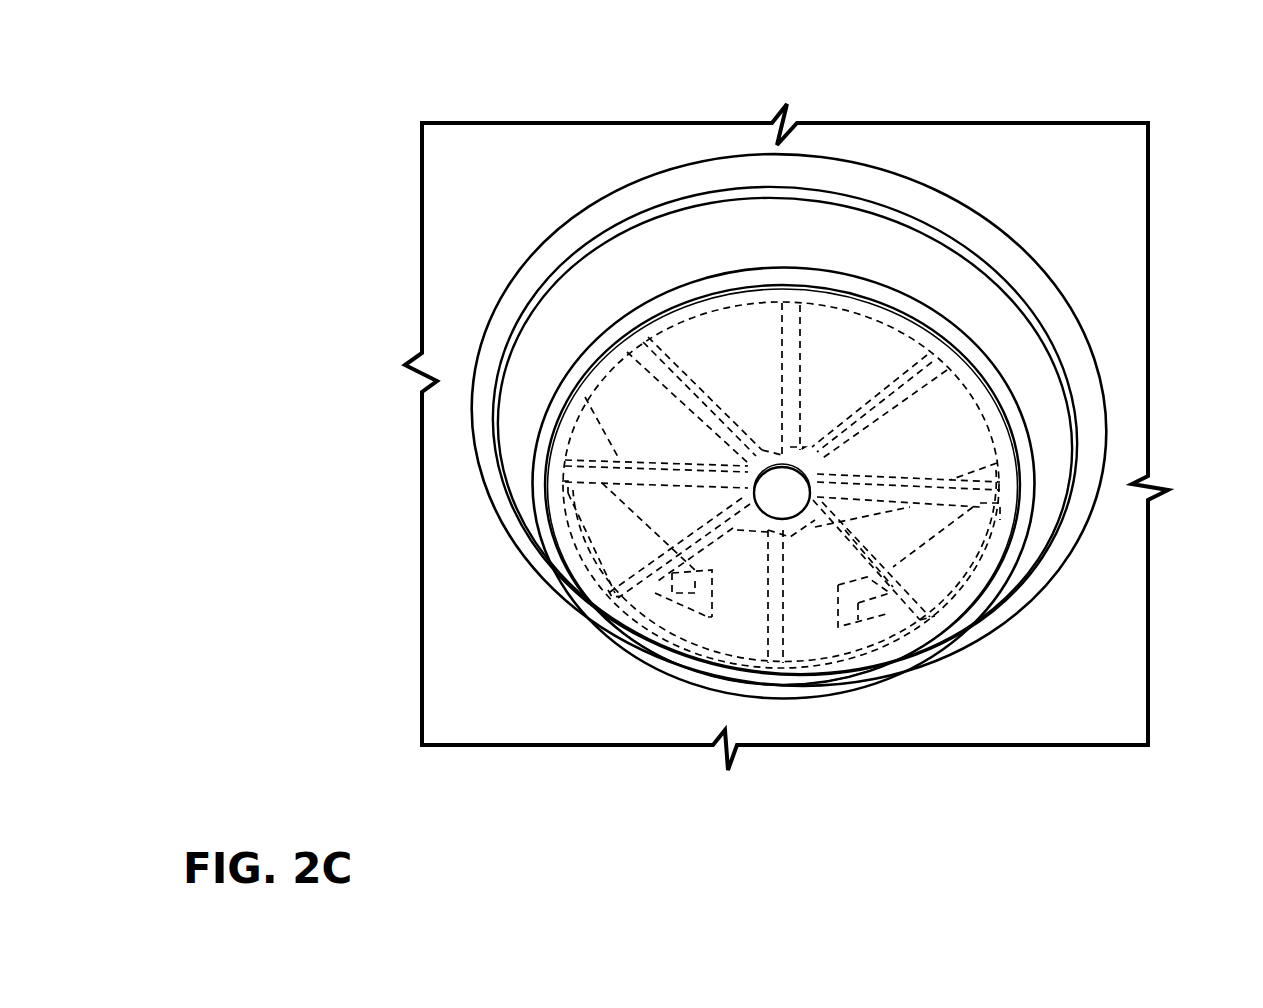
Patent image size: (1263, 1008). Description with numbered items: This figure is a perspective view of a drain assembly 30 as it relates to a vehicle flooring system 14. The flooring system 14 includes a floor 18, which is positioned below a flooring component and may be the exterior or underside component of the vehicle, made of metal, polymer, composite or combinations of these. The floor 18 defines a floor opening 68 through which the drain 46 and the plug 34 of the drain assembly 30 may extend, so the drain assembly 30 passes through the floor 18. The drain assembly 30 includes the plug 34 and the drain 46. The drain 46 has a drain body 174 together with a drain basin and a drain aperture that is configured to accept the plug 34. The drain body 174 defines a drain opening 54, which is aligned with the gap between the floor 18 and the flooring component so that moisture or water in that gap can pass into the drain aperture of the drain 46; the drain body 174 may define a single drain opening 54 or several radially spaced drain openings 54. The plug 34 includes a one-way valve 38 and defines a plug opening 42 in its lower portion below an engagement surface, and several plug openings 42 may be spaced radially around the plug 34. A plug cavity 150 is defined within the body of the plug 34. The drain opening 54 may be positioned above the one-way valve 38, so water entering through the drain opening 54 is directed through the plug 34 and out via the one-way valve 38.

The vehicle flooring system 14 is at (786, 401).
The floor 18 is at (1145, 180).
The drain assembly 30 is at (834, 420).
The plug 34 is at (775, 679).
The one-way valve 38 is at (668, 704).
The plug opening 42 is at (864, 695).
The drain 46 is at (885, 483).
The drain opening 54 is at (568, 674).
The floor opening 68 is at (843, 431).
The plug cavity 150 is at (780, 354).
The drain body 174 is at (900, 485).